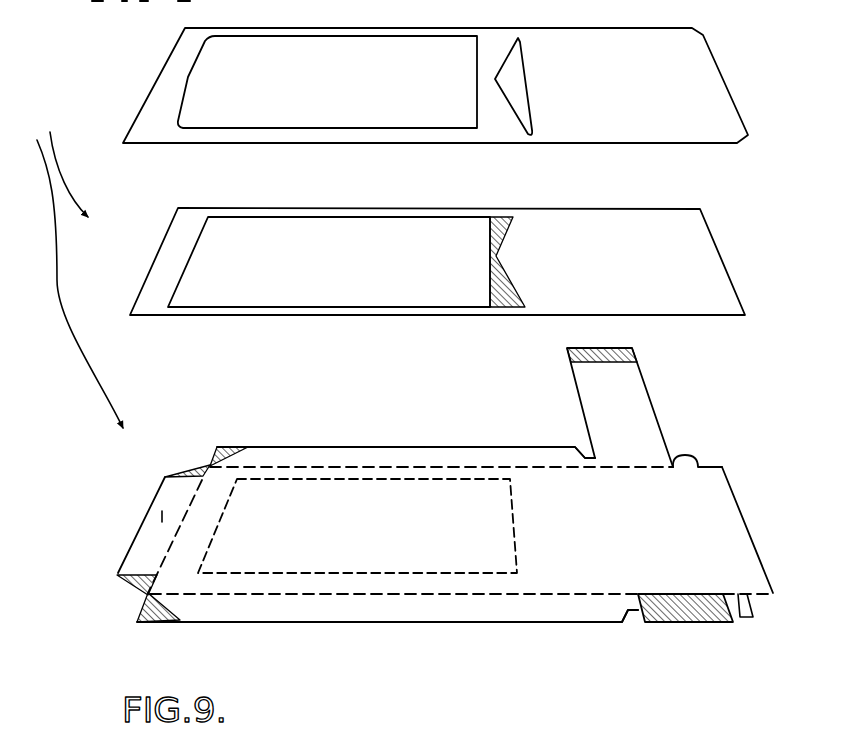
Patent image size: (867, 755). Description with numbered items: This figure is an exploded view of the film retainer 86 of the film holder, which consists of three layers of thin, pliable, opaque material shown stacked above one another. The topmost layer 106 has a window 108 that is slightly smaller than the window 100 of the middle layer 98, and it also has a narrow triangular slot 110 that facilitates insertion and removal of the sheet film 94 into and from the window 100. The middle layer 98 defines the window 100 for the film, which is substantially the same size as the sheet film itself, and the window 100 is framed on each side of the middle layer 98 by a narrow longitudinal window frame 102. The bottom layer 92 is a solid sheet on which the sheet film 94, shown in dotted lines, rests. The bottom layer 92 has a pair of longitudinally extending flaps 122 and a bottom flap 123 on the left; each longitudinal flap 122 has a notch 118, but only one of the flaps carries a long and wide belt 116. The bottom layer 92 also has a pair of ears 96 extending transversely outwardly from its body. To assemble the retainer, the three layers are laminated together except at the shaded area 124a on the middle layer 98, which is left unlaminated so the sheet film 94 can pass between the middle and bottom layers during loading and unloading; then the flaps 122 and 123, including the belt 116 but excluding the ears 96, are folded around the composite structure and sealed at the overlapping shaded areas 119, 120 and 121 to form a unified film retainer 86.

The film retainer 86 is at (115, 120).
The bottom layer 92 is at (648, 539).
The sheet film 94 is at (352, 517).
The ears 96 is at (679, 451).
The middle layer 98 is at (667, 278).
The window 100 is at (322, 248).
The window frame 102 is at (405, 213).
The topmost layer 106 is at (634, 96).
The window 108 is at (362, 62).
The triangular slot 110 is at (513, 67).
The belt 116 is at (624, 412).
The notch 118 is at (583, 453).
The shaded area 119 is at (193, 462).
The shaded area 120 is at (597, 348).
The shaded area 121 is at (682, 613).
The longitudinal flaps 122 is at (288, 460).
The bottom flap 123 is at (162, 516).
The shaded area 124a is at (507, 292).